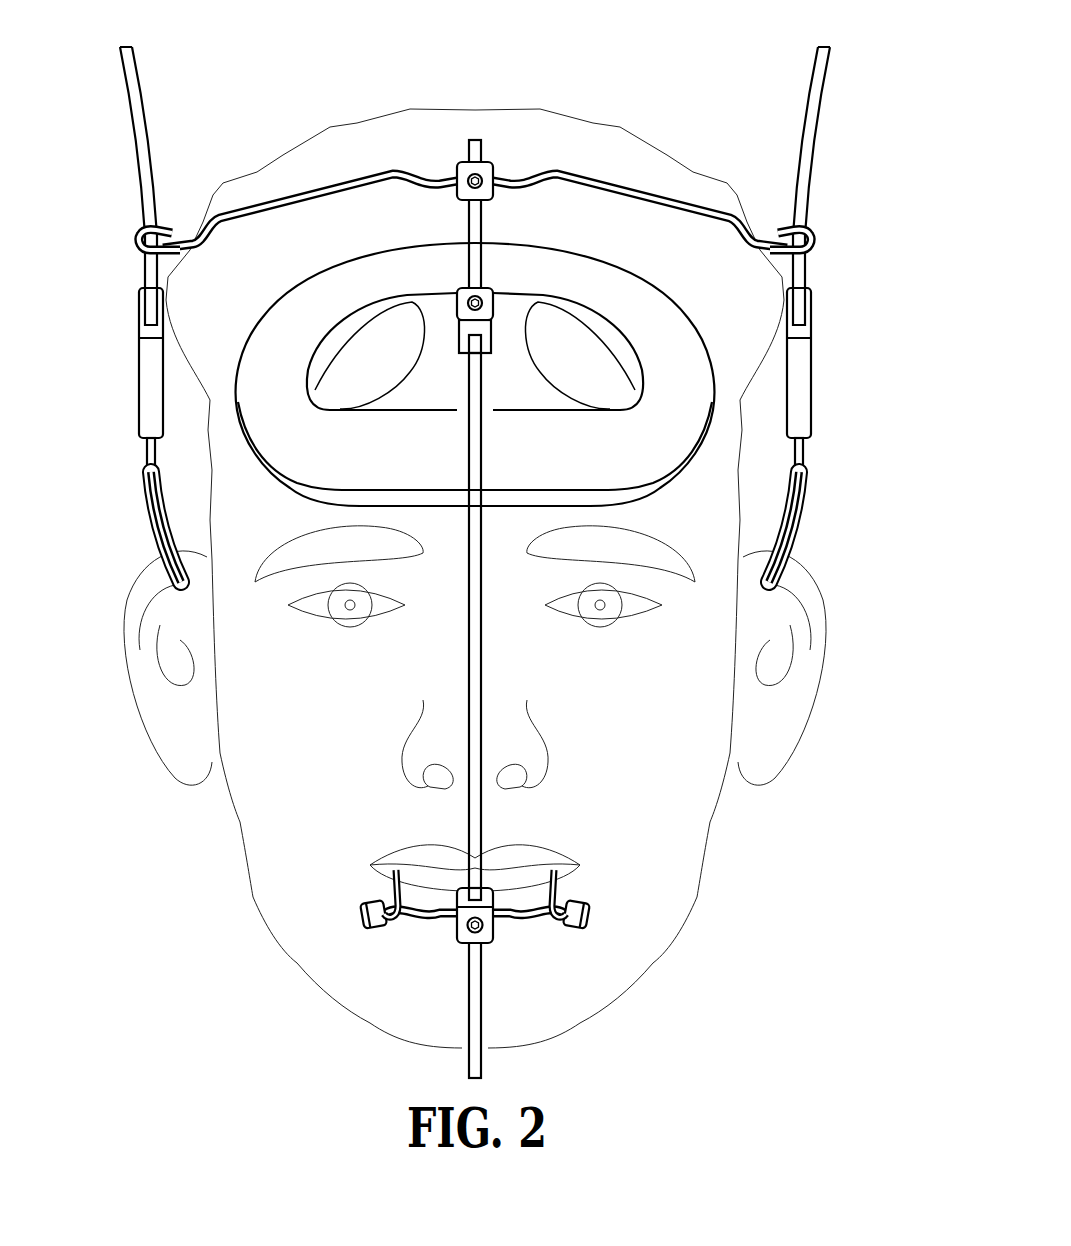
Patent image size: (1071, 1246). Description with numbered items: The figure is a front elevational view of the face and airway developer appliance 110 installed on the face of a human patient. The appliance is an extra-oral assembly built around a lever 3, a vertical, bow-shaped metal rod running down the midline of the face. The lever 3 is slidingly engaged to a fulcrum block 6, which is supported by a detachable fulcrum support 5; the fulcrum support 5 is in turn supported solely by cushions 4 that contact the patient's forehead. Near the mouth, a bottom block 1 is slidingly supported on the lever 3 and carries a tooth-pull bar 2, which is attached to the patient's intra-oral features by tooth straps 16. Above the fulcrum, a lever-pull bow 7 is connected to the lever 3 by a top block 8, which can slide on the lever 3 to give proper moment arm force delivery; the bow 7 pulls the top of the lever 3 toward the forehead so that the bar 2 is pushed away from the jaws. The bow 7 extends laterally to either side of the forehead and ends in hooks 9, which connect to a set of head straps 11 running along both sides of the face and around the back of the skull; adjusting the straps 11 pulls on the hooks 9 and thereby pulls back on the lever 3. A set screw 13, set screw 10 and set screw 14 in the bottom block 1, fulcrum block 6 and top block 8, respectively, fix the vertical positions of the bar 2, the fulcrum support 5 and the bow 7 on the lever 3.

The face and airway developer appliance 110 is at (476, 541).
The bottom block 1 is at (481, 922).
The tooth-pull bar 2 is at (360, 918).
The lever 3 is at (482, 658).
The cushions 4 is at (475, 374).
The fulcrum support 5 is at (570, 412).
The fulcrum block 6 is at (477, 305).
The lever-pull bow 7 is at (668, 208).
The top block 8 is at (478, 169).
The hooks 9 is at (142, 242).
The set screw 10 is at (483, 179).
The head straps 11 is at (146, 503).
The set screw 13 is at (468, 925).
The set screw 14 is at (484, 300).
The tooth straps 16 is at (396, 870).